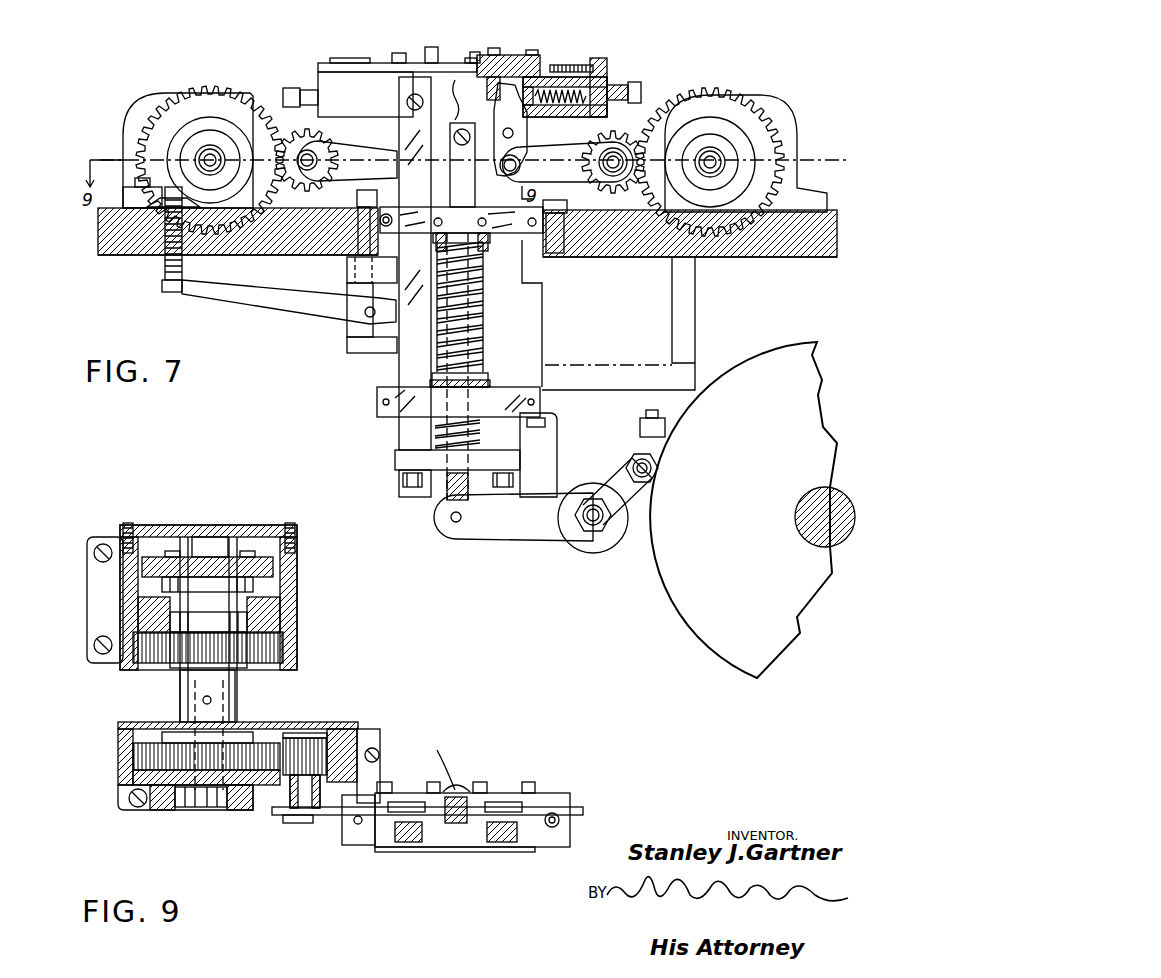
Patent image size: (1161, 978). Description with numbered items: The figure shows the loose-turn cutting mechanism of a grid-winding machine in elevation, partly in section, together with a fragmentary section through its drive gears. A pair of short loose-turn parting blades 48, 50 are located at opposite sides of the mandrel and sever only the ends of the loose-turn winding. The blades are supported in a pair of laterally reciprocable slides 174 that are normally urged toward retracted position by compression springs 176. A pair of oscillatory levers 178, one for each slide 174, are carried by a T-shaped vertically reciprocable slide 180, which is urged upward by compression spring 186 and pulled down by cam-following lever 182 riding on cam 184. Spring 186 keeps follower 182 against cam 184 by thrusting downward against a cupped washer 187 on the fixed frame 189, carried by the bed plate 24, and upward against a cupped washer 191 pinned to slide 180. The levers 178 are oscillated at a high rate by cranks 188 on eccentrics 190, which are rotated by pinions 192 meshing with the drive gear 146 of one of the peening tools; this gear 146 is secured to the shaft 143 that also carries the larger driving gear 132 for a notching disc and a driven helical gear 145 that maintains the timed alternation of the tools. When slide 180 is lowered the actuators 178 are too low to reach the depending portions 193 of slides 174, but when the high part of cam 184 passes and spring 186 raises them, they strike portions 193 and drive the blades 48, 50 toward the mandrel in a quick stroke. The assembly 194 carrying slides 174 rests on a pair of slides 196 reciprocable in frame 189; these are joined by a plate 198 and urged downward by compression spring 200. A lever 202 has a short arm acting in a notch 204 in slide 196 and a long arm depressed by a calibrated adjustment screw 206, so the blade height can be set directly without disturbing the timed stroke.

In FIG. 7, the machine bed 24 is at (760, 256).
In FIG. 7, the loose-turn parting blade 48 is at (455, 40).
In FIG. 7, the loose-turn parting blade 50 is at (470, 60).
In FIG. 9, the driving gear 132 is at (283, 650).
In FIG. 7, the shaft 143 is at (208, 158).
In FIG. 9, the shaft 143 is at (195, 795).
In FIG. 9, the driven helical gear 145 is at (270, 557).
In FIG. 7, the driving gear 146 is at (208, 78).
In FIG. 9, the driving gear 146 is at (270, 735).
In FIG. 7, the laterally reciprocable slide 174 is at (560, 77).
In FIG. 7, the compression spring 176 is at (600, 97).
In FIG. 7, the oscillatory lever 178 is at (522, 118).
In FIG. 9, the oscillatory lever 178 is at (425, 775).
In FIG. 7, the vertically reciprocable slide 180 is at (440, 495).
In FIG. 9, the vertically reciprocable slide 180 is at (460, 795).
In FIG. 7, the cam-following lever 182 is at (530, 530).
In FIG. 7, the cam 184 is at (680, 570).
In FIG. 7, the compression spring 186 is at (440, 320).
In FIG. 7, the cupped washer 187 is at (455, 383).
In FIG. 7, the crank 188 is at (365, 160).
In FIG. 9, the crank 188 is at (340, 815).
In FIG. 7, the fixed frame 189 is at (535, 398).
In FIG. 9, the fixed frame 189 is at (530, 842).
In FIG. 7, the eccentric 190 is at (307, 165).
In FIG. 9, the eccentric 190 is at (305, 825).
In FIG. 7, the cupped washer 191 is at (522, 245).
In FIG. 9, the cupped washer 191 is at (453, 760).
In FIG. 7, the pinion 192 is at (277, 96).
In FIG. 9, the pinion 192 is at (320, 730).
In FIG. 7, the depending portion 193 is at (457, 83).
In FIG. 7, the assembly 194 is at (372, 105).
In FIG. 7, the slide 196 is at (385, 385).
In FIG. 9, the slide 196 is at (400, 842).
In FIG. 7, the plate 198 is at (400, 460).
In FIG. 7, the compression spring 200 is at (440, 440).
In FIG. 7, the lever 202 is at (320, 300).
In FIG. 7, the notch 204 is at (372, 350).
In FIG. 7, the calibrated adjustment screw 206 is at (165, 273).